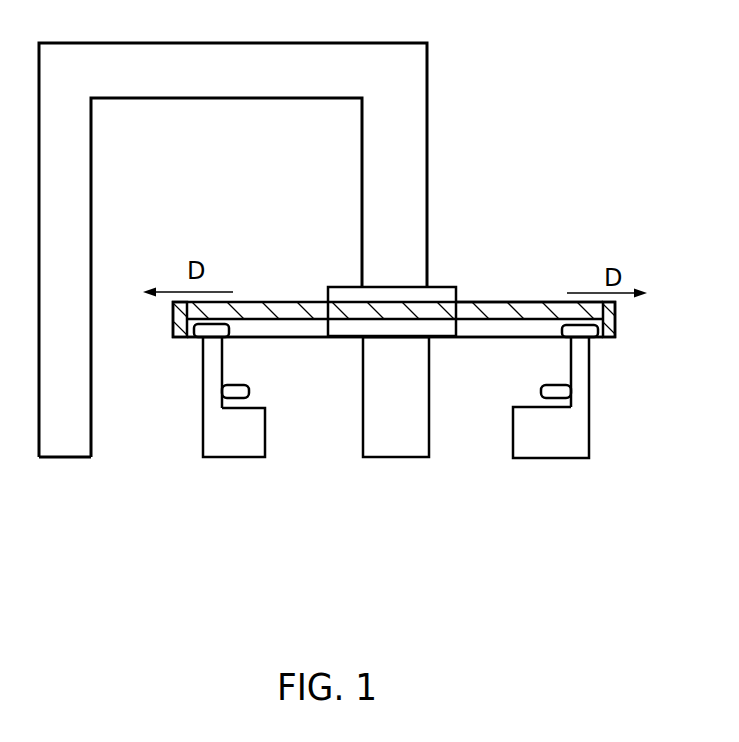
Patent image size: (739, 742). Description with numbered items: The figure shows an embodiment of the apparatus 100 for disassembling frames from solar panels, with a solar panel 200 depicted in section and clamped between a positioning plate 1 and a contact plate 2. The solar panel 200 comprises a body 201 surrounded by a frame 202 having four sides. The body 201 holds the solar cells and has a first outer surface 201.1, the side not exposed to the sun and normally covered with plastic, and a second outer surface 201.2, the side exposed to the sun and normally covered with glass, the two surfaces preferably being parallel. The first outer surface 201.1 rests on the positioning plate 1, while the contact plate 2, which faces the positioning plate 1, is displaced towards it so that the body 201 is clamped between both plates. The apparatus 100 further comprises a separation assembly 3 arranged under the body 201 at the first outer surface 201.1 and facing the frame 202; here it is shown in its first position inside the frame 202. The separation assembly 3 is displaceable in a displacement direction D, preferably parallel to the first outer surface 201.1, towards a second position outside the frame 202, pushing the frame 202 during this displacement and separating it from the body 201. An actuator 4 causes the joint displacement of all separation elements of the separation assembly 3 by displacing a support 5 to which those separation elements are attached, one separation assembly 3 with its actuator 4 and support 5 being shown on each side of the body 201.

The apparatus 100 is at (538, 91).
The positioning plate 1 is at (348, 327).
The contact plate 2 is at (443, 287).
The solar panel 200 is at (512, 268).
The body 201 is at (282, 310).
The first outer surface 201.1 is at (290, 318).
The second outer surface 201.2 is at (546, 302).
The frame 202 is at (607, 317).
The separation assembly 3 is at (173, 337).
The actuator 4 is at (227, 393).
The support 5 is at (223, 437).